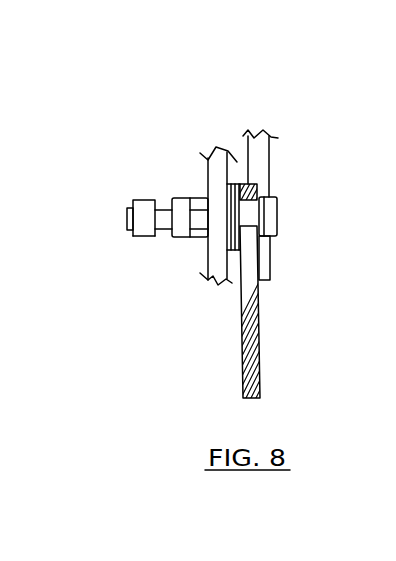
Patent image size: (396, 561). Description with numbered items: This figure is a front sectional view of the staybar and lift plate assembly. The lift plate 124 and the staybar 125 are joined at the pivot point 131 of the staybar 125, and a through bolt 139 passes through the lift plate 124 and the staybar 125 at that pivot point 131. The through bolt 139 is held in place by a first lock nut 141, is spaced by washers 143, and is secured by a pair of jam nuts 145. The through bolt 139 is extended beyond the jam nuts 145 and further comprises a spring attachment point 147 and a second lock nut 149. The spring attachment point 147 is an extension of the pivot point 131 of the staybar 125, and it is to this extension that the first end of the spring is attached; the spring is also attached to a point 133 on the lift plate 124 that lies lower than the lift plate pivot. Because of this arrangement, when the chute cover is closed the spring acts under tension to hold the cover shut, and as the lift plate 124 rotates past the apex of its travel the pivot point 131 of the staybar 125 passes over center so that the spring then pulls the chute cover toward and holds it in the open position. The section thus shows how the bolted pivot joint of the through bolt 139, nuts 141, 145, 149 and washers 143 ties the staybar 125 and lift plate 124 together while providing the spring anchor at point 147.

The lift plate 124 is at (218, 152).
The staybar 125 is at (247, 186).
The pivot point 131 is at (244, 207).
The point 133 is at (213, 214).
The through bolt 139 is at (126, 221).
The first lock nut 141 is at (278, 230).
The washers 143 is at (175, 245).
The jam nuts 145 is at (178, 238).
The spring attachment point 147 is at (107, 205).
The second lock nut 149 is at (106, 250).